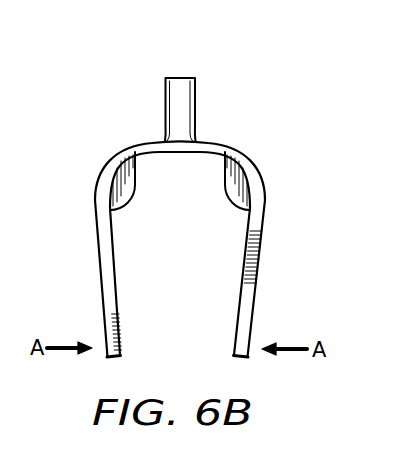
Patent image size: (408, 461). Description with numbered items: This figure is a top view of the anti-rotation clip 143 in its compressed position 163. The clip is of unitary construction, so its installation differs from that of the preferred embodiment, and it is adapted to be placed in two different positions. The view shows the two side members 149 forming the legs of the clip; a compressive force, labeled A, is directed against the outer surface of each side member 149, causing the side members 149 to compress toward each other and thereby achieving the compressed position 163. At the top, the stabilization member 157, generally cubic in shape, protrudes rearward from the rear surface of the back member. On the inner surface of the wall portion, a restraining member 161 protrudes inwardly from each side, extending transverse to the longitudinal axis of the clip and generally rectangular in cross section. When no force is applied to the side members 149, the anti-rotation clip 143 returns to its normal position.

The anti-rotation clip 143 is at (177, 188).
The side member 149 is at (103, 283).
The stabilization member 157 is at (182, 108).
The restraining member 161 is at (125, 195).
The compressed position 163 is at (199, 356).